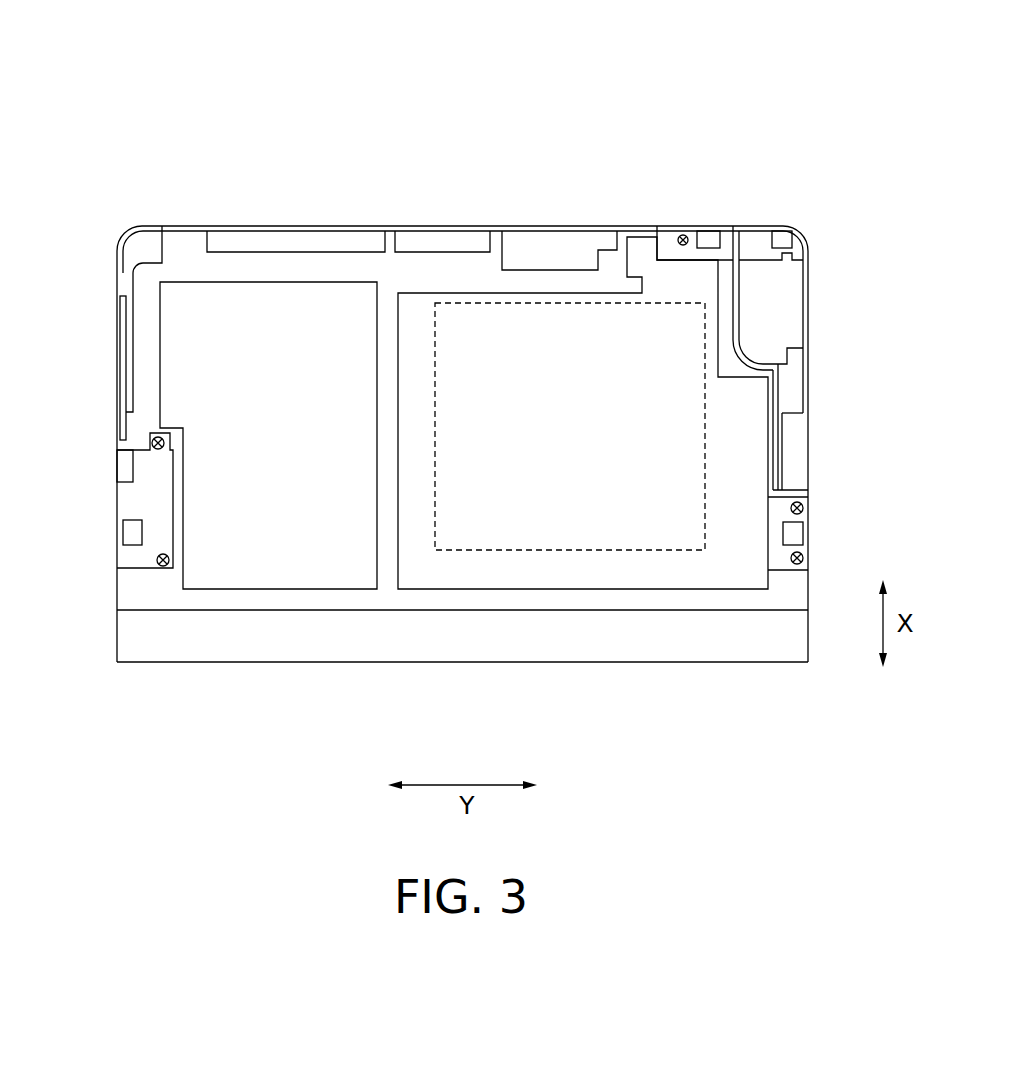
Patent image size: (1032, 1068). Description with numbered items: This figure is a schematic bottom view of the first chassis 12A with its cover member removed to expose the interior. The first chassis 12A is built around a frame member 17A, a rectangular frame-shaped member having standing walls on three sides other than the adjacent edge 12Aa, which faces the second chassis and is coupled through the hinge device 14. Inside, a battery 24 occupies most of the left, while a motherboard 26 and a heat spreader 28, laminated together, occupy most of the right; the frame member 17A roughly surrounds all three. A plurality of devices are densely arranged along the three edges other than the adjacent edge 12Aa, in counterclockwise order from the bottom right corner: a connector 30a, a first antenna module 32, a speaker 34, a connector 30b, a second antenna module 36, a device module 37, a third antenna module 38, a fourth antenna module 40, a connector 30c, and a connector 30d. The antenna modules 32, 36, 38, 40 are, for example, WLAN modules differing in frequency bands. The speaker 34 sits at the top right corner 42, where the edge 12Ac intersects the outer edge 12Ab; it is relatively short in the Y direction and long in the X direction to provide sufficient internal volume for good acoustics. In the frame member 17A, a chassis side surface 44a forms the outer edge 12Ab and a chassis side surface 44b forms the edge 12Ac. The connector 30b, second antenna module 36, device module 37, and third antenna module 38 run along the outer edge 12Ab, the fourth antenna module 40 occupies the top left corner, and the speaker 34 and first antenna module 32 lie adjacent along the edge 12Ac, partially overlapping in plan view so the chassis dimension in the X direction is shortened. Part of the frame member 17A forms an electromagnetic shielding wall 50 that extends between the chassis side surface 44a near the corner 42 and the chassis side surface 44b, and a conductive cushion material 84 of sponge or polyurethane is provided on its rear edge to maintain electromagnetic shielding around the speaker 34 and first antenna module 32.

The first chassis 12A is at (725, 81).
The adjacent edge 12Aa is at (363, 663).
The outer edge 12Ab is at (473, 224).
The edge 12Ac is at (805, 472).
The hinge device 14 is at (197, 648).
The frame member 17A is at (190, 253).
The battery 24 is at (276, 568).
The motherboard 26 is at (582, 533).
The heat spreader 28 is at (690, 568).
The connector 30a is at (797, 538).
The connector 30b is at (707, 241).
The connector 30c is at (128, 467).
The connector 30d is at (128, 535).
The first antenna module 32 is at (793, 393).
The speaker 34 is at (783, 292).
The second antenna module 36 is at (555, 241).
The device module 37 is at (436, 241).
The third antenna module 38 is at (262, 241).
The fourth antenna module 40 is at (127, 280).
The corner 42 is at (782, 241).
The chassis side surface 44a is at (463, 259).
The chassis side surface 44b is at (844, 463).
The electromagnetic shielding wall 50 is at (751, 229).
The cushion material 84 is at (757, 237).